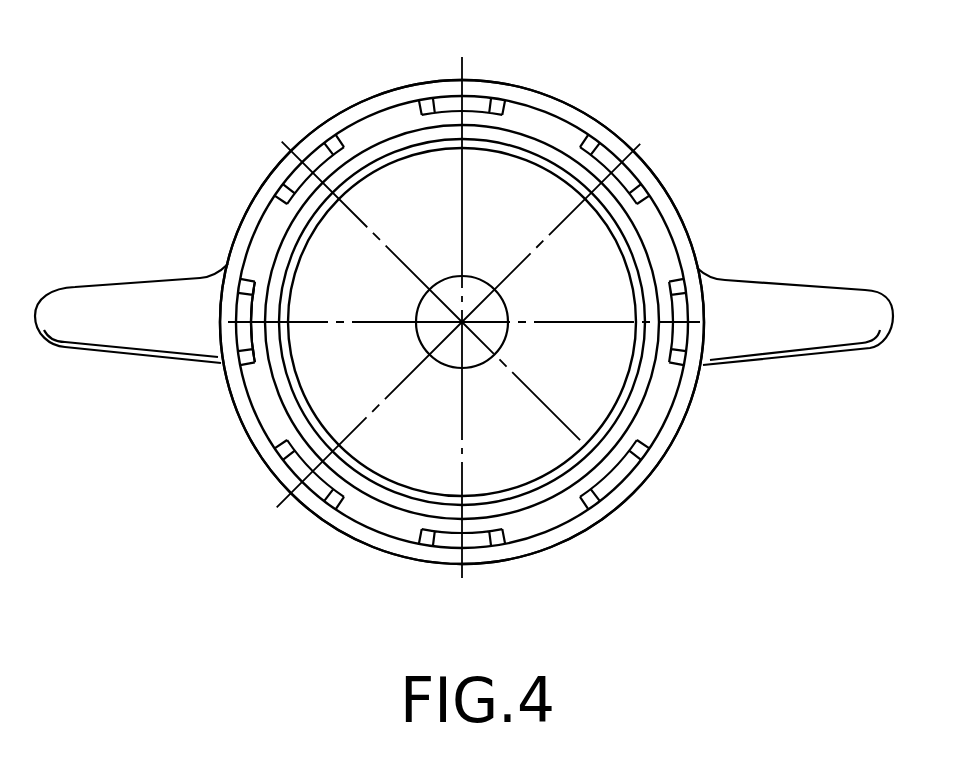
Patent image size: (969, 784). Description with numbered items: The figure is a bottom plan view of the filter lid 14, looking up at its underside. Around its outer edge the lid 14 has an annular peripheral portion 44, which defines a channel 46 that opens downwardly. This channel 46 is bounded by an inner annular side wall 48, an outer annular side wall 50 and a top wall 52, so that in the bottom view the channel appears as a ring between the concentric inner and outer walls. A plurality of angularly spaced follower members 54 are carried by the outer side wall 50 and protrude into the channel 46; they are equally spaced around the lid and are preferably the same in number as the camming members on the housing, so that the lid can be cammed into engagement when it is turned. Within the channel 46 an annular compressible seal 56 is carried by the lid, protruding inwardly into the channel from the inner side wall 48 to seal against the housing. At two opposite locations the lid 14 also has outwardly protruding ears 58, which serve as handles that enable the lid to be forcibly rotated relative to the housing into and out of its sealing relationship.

The lid 14 is at (570, 96).
The annular peripheral portion 44 is at (361, 98).
The channel 46 is at (260, 250).
The inner annular side wall 48 is at (303, 243).
The outer annular side wall 50 is at (238, 410).
The top wall 52 is at (268, 403).
The follower members 54 is at (478, 95).
The annular compressible seal 56 is at (551, 142).
The ears 58 is at (90, 293).